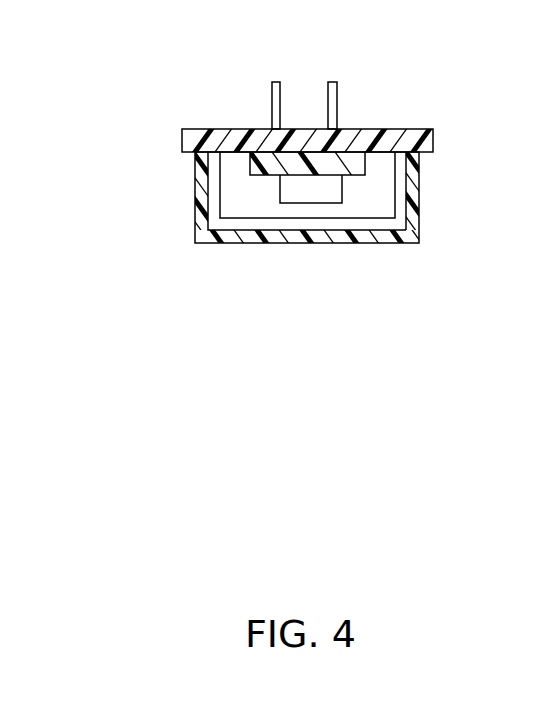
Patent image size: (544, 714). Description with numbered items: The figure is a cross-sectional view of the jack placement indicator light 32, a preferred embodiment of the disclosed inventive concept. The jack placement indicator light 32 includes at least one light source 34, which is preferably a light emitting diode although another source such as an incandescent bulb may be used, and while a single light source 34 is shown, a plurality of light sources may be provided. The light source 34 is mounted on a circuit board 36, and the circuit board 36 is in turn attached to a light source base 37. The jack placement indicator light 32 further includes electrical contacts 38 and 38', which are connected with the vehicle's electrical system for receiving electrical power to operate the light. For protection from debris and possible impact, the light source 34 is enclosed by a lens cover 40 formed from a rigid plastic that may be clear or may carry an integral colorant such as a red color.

The jack placement indicator light 32 is at (418, 203).
The light source 34 is at (290, 185).
The circuit board 36 is at (272, 172).
The light source base 37 is at (398, 137).
The electrical contact 38 is at (300, 71).
The electrical contact 38' is at (369, 81).
The lens cover 40 is at (195, 200).